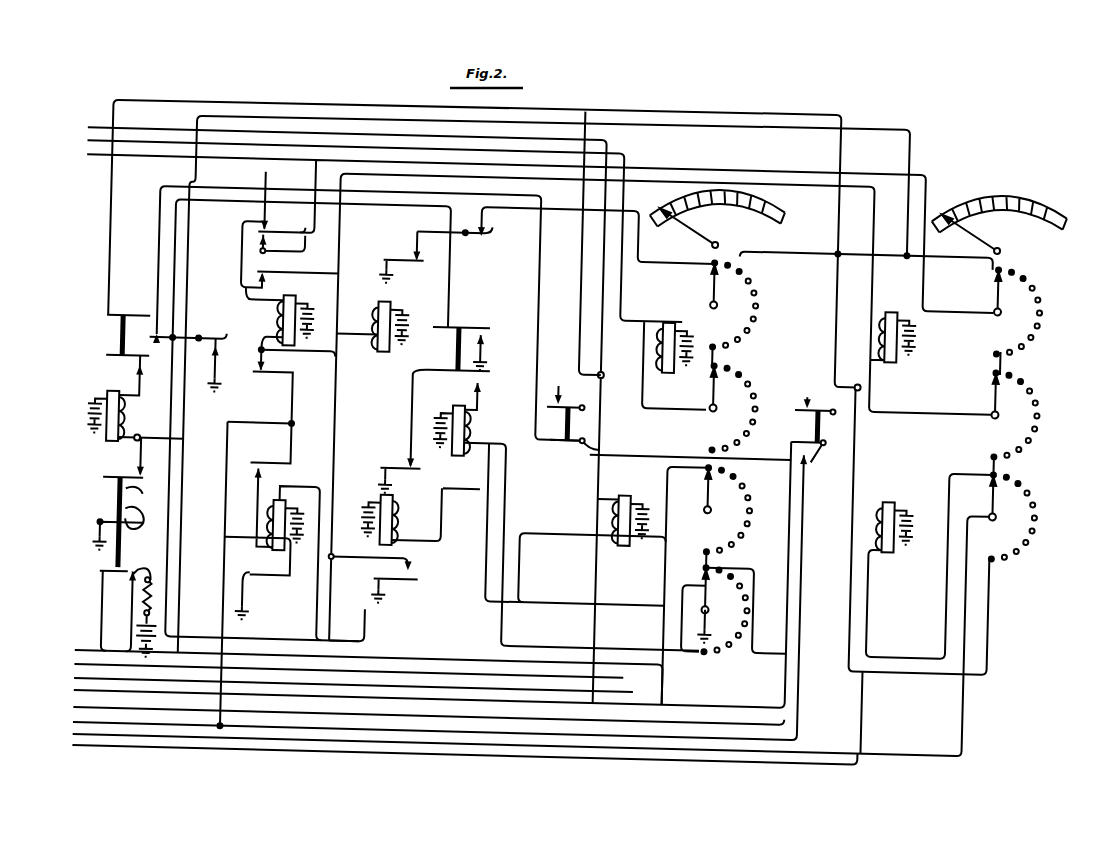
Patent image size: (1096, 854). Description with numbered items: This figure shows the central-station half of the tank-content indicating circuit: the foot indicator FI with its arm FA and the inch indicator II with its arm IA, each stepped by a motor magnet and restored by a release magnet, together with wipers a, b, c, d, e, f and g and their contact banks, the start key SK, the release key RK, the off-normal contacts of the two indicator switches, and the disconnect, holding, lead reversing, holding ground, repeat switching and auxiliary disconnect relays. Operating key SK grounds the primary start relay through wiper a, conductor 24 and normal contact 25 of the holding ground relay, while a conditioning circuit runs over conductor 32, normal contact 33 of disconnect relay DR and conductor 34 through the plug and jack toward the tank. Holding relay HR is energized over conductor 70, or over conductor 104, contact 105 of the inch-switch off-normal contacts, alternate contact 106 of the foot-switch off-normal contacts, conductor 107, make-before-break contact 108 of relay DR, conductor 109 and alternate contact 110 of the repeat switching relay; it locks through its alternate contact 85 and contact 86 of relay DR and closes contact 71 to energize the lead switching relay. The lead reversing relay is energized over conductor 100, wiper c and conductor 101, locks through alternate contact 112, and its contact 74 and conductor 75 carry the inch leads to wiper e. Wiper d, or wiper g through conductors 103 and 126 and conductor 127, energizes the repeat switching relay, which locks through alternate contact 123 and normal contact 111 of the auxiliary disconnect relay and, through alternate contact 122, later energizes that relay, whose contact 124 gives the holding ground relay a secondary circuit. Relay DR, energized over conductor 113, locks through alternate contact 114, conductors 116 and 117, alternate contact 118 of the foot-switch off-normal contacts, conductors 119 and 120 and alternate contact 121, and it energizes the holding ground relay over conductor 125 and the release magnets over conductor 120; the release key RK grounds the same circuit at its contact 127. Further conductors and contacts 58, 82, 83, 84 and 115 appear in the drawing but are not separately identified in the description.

The conductor 116 is at (385, 94).
The conductor 109 is at (205, 288).
The conductor 117 is at (610, 318).
The conductor 75 is at (695, 150).
The conductor 84 is at (876, 202).
The conductor 107 is at (152, 244).
The alternate contact of repeat switching relay RSR 110 is at (480, 316).
The conductor 24 is at (672, 243).
The conductor 120 is at (400, 652).
The conductor 58 is at (180, 676).
The conductor 34 is at (108, 680).
The conductor 101 is at (700, 683).
The conductor 70 is at (168, 712).
The conductor 104 is at (290, 718).
The conductor and release key contact 127 is at (933, 722).
The conductor 82 is at (152, 752).
The conductor 126 is at (950, 654).
The contact 115 is at (140, 310).
The alternate contact of disconnect relay DR 114 is at (136, 362).
The make-before-break contact of disconnect relay DR 108 is at (160, 338).
The conductor 125 is at (196, 432).
The contact of disconnect relay DR 86 is at (160, 478).
The contact of disconnect relay DR 121 is at (112, 516).
The normal contact of disconnect relay DR 33 is at (136, 572).
The conductor 32 is at (117, 611).
The conductor 113 is at (218, 520).
The conductor 100 is at (330, 432).
The alternate contact of lead reversing relay LRR 112 is at (272, 406).
The alternate contact of holding relay HR 85 is at (280, 456).
The alternate contact of holding relay HR 71 is at (300, 570).
The contact of lead reversing relay LRR 74 is at (285, 222).
The contact 83 is at (282, 262).
The normal contact of holding ground relay HGR 25 is at (406, 252).
The alternate contact of repeat switching relay RSR 123 is at (492, 358).
The normal contact of auxiliary disconnect relay ADR 111 is at (412, 460).
The contact of auxiliary disconnect relay ADR 124 is at (410, 572).
The alternate contact of repeat switching relay RSR 122 is at (486, 480).
The conductor 103 is at (575, 632).
The alternate contact of off-normal contacts ON1 118 is at (560, 374).
The alternate contact of off-normal contacts ON1 106 is at (562, 428).
The conductor 119 is at (614, 486).
The contact of off-normal contacts ON2 105 is at (830, 452).